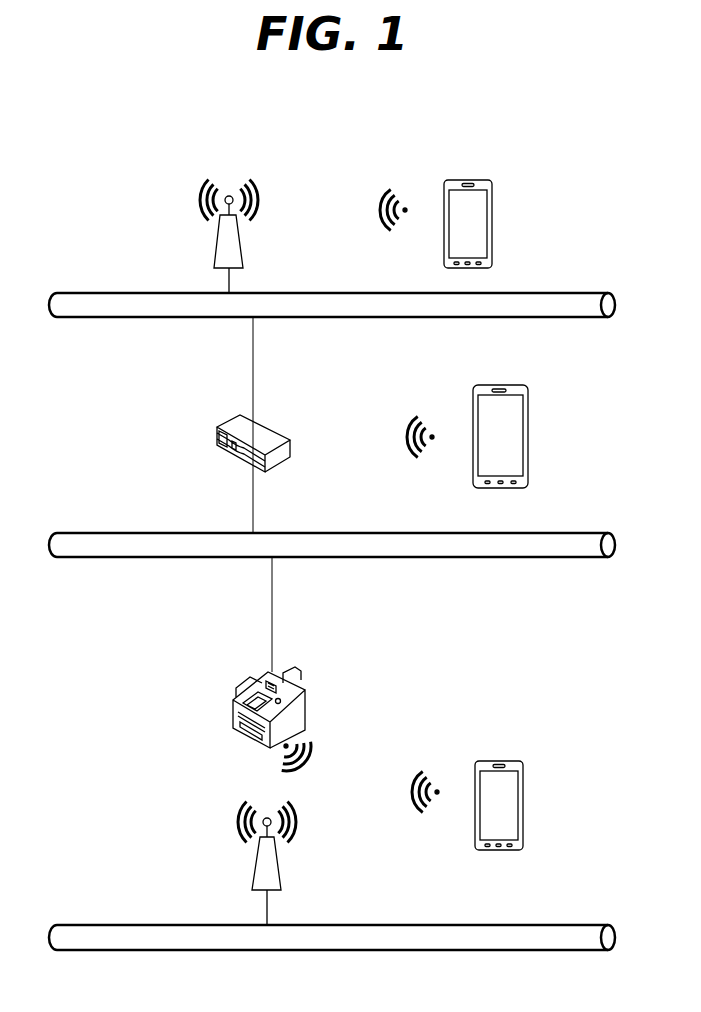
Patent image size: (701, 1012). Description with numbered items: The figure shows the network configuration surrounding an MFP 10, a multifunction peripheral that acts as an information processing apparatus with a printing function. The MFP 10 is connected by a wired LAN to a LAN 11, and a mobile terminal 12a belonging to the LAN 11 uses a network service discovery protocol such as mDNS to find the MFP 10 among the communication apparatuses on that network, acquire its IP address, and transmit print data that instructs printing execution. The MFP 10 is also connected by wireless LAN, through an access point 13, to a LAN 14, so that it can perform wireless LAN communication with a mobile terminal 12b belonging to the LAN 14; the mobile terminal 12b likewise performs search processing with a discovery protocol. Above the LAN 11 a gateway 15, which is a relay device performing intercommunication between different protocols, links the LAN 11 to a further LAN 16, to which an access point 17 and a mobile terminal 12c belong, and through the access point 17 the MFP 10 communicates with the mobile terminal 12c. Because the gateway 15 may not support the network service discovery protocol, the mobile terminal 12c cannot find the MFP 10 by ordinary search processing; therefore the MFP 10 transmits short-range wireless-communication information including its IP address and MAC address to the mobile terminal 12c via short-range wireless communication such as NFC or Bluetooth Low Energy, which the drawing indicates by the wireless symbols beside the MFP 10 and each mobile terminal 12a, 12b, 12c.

The MFP 10 is at (305, 700).
The LAN 11 is at (570, 540).
The mobile terminal 12a is at (528, 425).
The mobile terminal 12b is at (504, 760).
The mobile terminal 12c is at (472, 178).
The access point 13 is at (298, 822).
The LAN 14 is at (570, 932).
The gateway 15 is at (268, 432).
The LAN 16 is at (570, 298).
The access point 17 is at (258, 200).